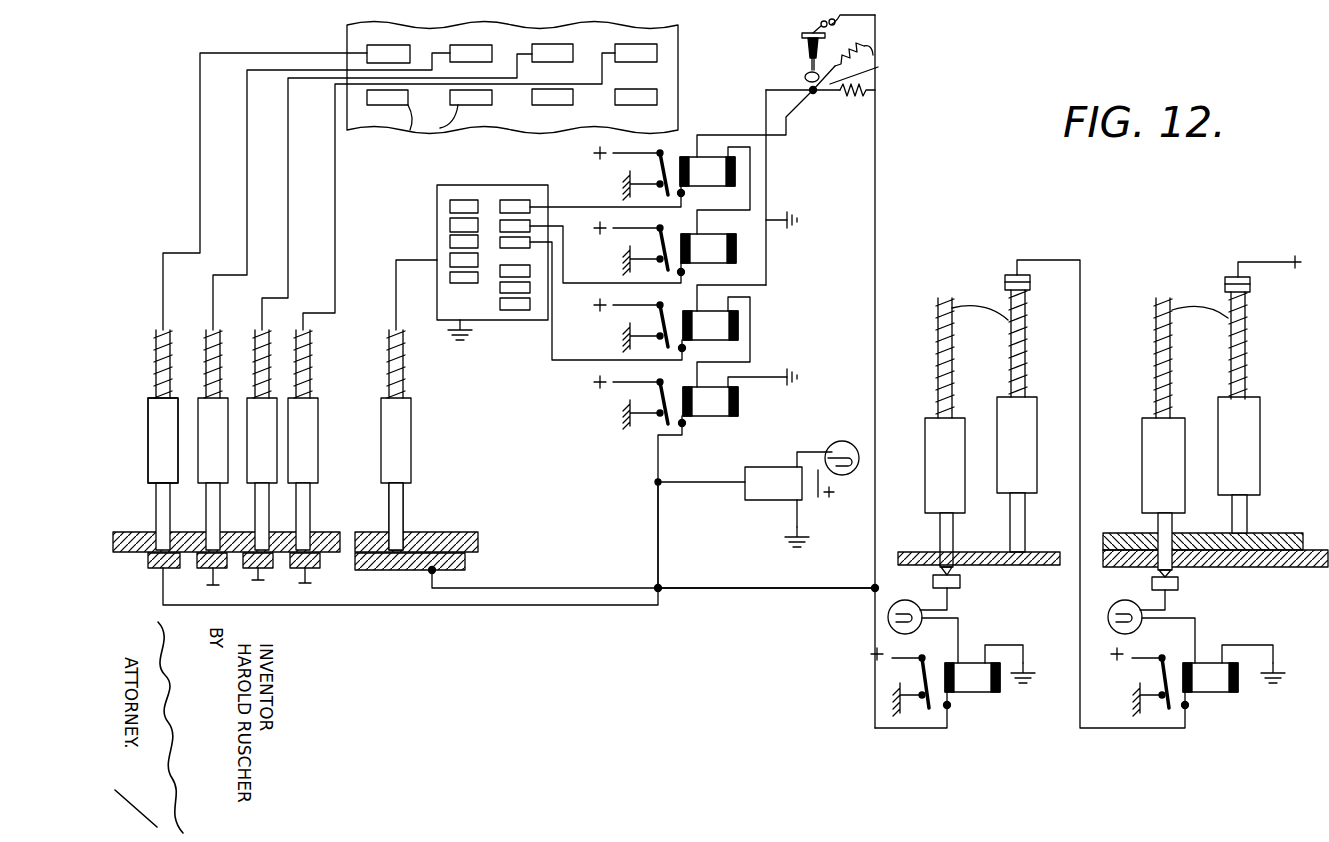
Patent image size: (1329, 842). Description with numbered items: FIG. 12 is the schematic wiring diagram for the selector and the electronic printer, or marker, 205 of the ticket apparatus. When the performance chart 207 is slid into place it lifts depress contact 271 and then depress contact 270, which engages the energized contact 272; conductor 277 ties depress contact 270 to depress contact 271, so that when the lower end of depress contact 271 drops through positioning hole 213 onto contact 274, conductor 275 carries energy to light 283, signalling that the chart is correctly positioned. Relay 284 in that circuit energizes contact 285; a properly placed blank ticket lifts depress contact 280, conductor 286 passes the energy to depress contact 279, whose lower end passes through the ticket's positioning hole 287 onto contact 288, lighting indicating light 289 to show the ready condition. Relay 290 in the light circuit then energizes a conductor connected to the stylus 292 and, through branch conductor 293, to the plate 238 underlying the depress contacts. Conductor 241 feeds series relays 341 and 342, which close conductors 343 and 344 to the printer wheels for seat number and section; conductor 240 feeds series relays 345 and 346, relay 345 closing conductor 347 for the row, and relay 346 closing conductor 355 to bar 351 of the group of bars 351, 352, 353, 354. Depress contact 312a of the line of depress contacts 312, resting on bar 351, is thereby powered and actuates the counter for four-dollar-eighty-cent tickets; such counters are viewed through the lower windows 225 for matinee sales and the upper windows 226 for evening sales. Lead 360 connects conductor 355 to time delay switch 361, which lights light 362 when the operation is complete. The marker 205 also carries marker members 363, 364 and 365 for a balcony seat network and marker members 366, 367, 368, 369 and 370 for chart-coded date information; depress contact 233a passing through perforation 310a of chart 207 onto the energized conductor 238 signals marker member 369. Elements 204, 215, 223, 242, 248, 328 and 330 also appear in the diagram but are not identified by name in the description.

The control unit 204 is at (678, 108).
The electronic printer 205 is at (439, 331).
The performance chart 207 is at (477, 540).
The positioning hole 213 is at (1183, 533).
The contact 215 is at (805, 77).
The plate 223 is at (1312, 565).
The lower windows 225 is at (410, 130).
The upper windows 226 is at (367, 45).
The depress contact 233a is at (413, 450).
The plate 238 is at (465, 566).
The conductor 240 is at (828, 93).
The conductor 241 is at (876, 71).
The resistor 242 is at (853, 96).
The resistor 248 is at (873, 58).
The depress contact 270 is at (1255, 428).
The depress contact 271 is at (1152, 441).
The contact 272 is at (1250, 283).
The contact 274 is at (1178, 583).
The conductor 275 is at (1167, 606).
The conductor 277 is at (1187, 308).
The depress contact 279 is at (932, 445).
The depress contact 280 is at (1032, 423).
The light 283 is at (1125, 602).
The relay 284 is at (1215, 693).
The contact 285 is at (1030, 283).
The conductor 286 is at (977, 308).
The positioning hole 287 is at (973, 544).
The contact 288 is at (960, 582).
The indicating light 289 is at (907, 593).
The relay 290 is at (977, 691).
The stylus 292 is at (794, 45).
The branch conductor 293 is at (760, 588).
The perforation 310a is at (412, 537).
The line of depress contacts 312 is at (141, 449).
The depress contact 312a is at (145, 413).
The conductor 328 is at (810, 72).
The spring 330 is at (817, 25).
The relay 341 is at (742, 170).
The relay 342 is at (742, 248).
The conductor 343 is at (590, 205).
The conductor 344 is at (590, 288).
The relay 345 is at (725, 326).
The relay 346 is at (714, 409).
The conductor 347 is at (598, 362).
The bar 351 is at (148, 566).
The bar 352 is at (197, 573).
The bar 353 is at (253, 572).
The bar 354 is at (316, 572).
The conductor 355 is at (669, 519).
The lead 360 is at (553, 227).
The time delay switch 361 is at (500, 225).
The light 362 is at (522, 205).
The marker member 363 is at (500, 271).
The marker member 364 is at (530, 287).
The marker member 365 is at (515, 310).
The marker member 366 is at (450, 205).
The marker member 367 is at (450, 224).
The marker member 368 is at (450, 241).
The marker member 369 is at (450, 260).
The marker member 370 is at (450, 277).